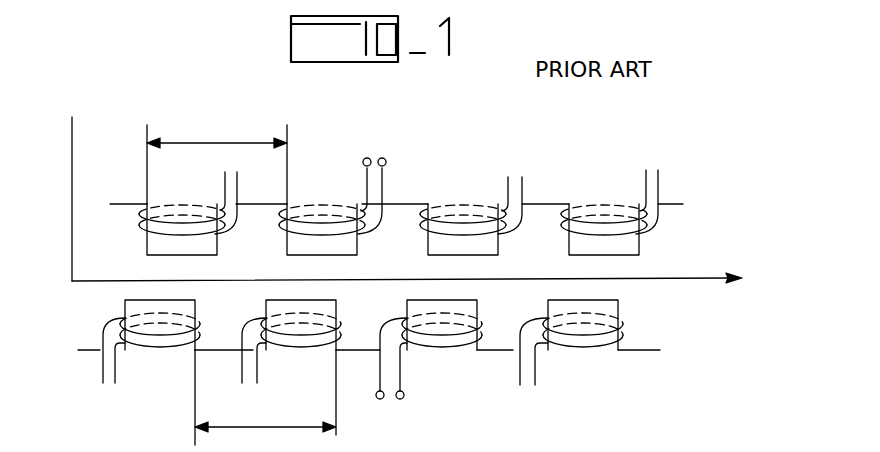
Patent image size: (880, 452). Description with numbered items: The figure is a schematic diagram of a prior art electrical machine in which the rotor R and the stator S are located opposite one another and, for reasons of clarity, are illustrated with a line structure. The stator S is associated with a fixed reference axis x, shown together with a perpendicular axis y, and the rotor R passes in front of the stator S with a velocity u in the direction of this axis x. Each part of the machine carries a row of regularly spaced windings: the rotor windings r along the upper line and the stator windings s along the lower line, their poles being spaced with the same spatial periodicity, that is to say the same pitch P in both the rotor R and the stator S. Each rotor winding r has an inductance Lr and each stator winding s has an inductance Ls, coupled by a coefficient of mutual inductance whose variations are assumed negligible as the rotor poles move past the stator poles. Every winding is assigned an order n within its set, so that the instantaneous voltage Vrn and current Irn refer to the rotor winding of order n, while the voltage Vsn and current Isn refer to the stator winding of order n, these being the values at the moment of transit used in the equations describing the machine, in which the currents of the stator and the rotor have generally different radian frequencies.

The fixed reference axis x is at (419, 275).
The axis y is at (58, 196).
The pitch P is at (241, 278).
The rotor R is at (414, 278).
The stator S is at (395, 367).
The rotor inductance Lr is at (414, 278).
The stator inductance Ls is at (369, 370).
The rotor winding r is at (600, 254).
The stator winding s is at (616, 300).
The rotor winding voltage Vrn is at (411, 185).
The rotor winding current Irn is at (530, 170).
The stator winding voltage Vsn is at (426, 375).
The stator winding current Isn is at (403, 366).